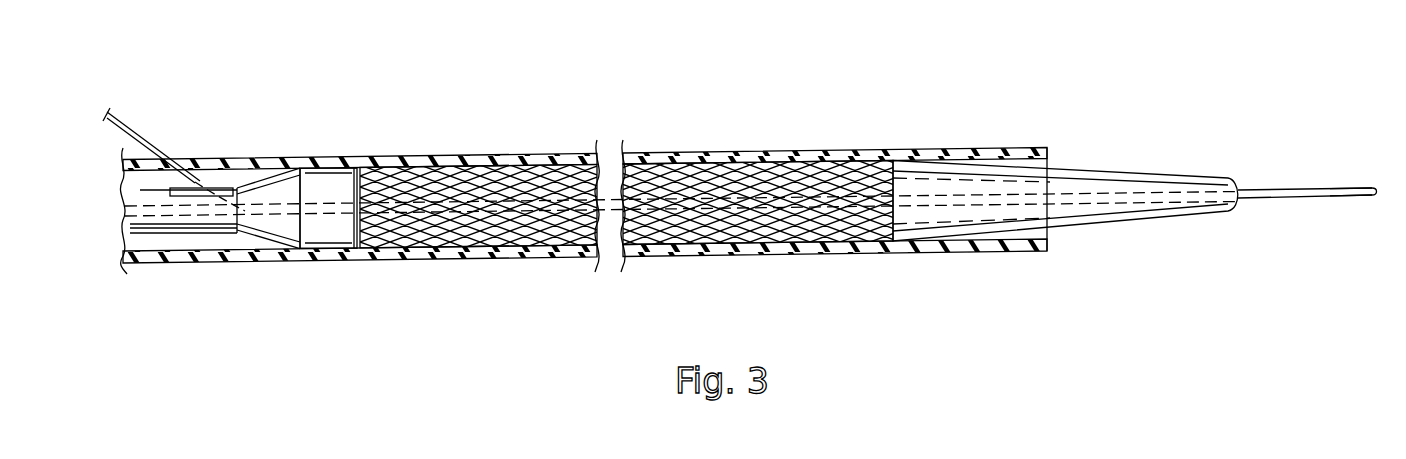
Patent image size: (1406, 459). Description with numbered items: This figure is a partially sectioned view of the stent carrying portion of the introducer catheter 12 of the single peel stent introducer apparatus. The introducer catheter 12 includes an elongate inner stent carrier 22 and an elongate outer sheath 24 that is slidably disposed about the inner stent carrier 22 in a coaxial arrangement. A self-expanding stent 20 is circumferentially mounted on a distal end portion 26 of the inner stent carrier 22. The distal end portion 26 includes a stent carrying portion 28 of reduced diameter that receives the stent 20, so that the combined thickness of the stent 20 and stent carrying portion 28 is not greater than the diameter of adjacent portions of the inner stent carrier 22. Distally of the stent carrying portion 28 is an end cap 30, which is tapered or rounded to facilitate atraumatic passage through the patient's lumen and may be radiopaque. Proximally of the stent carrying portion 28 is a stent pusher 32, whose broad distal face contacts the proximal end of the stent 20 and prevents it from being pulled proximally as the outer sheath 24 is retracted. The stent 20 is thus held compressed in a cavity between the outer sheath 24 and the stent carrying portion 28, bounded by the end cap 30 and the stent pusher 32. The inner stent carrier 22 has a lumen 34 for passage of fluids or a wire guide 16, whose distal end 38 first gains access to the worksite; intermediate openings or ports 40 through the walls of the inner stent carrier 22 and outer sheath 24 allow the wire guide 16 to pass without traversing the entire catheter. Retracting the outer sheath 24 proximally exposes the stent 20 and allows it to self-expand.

The introducer catheter 12 is at (740, 186).
The wire guide 16 is at (1307, 213).
The self-expanding stent 20 is at (767, 170).
The inner stent carrier 22 is at (210, 235).
The outer sheath 24 is at (400, 262).
The distal end portion 26 is at (578, 89).
The stent carrying portion 28 is at (558, 228).
The end cap 30 is at (1143, 215).
The stent pusher 32 is at (327, 186).
The lumen 34 is at (162, 215).
The distal end 38 is at (1333, 200).
The intermediate openings or ports 40 is at (193, 157).